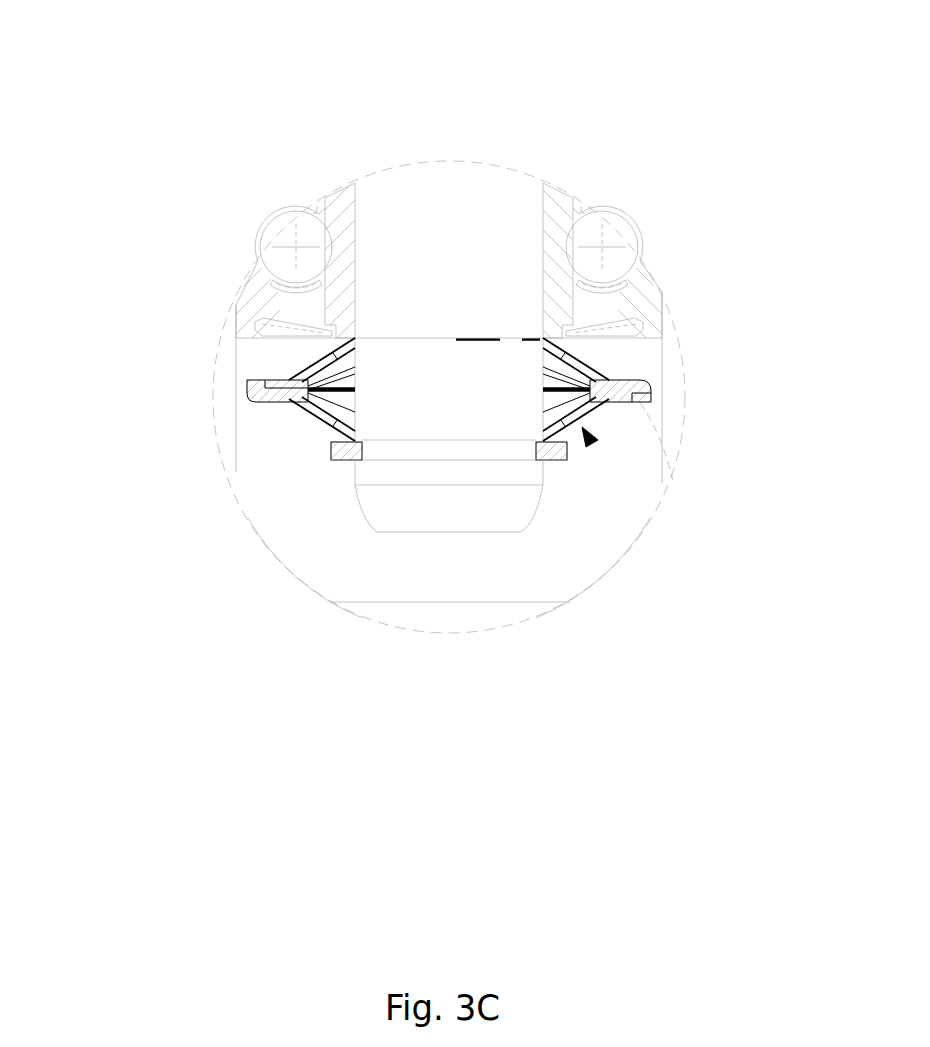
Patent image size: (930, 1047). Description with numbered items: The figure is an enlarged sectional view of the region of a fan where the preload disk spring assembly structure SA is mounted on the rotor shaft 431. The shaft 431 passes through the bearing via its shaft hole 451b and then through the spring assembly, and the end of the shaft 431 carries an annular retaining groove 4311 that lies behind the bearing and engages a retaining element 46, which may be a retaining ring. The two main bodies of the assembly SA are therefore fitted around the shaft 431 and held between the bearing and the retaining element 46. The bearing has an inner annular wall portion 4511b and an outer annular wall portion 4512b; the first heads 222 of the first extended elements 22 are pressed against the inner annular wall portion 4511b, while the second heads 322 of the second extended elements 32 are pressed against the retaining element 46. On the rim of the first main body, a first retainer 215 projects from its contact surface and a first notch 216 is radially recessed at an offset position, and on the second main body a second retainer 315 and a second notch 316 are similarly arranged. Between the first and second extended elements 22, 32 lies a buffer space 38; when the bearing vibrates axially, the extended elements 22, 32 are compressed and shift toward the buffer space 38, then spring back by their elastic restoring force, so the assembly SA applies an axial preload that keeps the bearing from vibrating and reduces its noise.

The shaft 431 is at (405, 208).
The shaft hole 451b is at (325, 198).
The inner annular wall portion 4511b is at (560, 200).
The outer annular wall portion 4512b is at (650, 297).
The second retainer 315 is at (242, 338).
The first head 222 is at (663, 363).
The first notch 216 is at (250, 385).
The first retainer 215 is at (660, 468).
The second extended element 32 is at (306, 418).
The second notch 316 is at (652, 398).
The first extended element 22 is at (570, 345).
The second head 322 is at (328, 440).
The retaining element 46 is at (562, 463).
The annular retaining groove 4311 is at (400, 445).
The buffer space 38 is at (492, 447).
The preload disk spring assembly structure SA is at (594, 447).